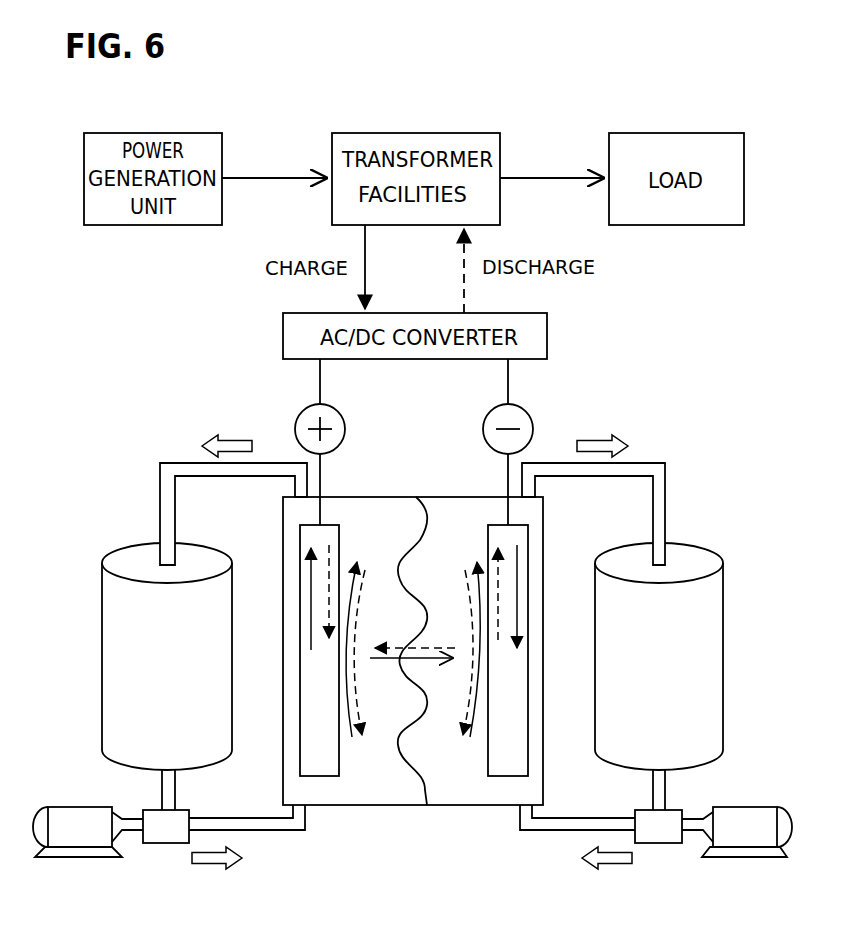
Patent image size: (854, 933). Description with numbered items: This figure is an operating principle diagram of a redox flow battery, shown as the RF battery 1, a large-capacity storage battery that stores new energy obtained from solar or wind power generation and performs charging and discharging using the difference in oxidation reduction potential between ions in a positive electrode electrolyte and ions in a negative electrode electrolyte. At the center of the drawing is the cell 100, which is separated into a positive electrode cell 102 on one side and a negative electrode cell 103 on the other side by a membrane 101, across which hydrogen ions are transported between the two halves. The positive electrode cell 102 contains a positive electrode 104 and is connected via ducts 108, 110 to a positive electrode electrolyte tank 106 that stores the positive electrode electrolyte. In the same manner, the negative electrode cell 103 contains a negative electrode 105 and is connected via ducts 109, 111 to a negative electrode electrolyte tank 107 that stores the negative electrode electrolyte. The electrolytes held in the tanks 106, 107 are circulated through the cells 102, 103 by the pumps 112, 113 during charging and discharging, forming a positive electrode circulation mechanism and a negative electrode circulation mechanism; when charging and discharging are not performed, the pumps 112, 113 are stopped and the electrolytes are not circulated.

The RF battery 1 is at (243, 393).
The cell 100 is at (378, 496).
The membrane 101 is at (424, 786).
The positive electrode cell 102 is at (348, 806).
The negative electrode cell 103 is at (478, 806).
The positive electrode 104 is at (300, 749).
The negative electrode 105 is at (528, 749).
The positive electrode electrolyte tank 106 is at (121, 556).
The negative electrode electrolyte tank 107 is at (707, 556).
The duct 108 is at (268, 831).
The duct 109 is at (557, 831).
The duct 110 is at (178, 463).
The duct 111 is at (651, 463).
The pump 112 is at (62, 807).
The pump 113 is at (758, 807).